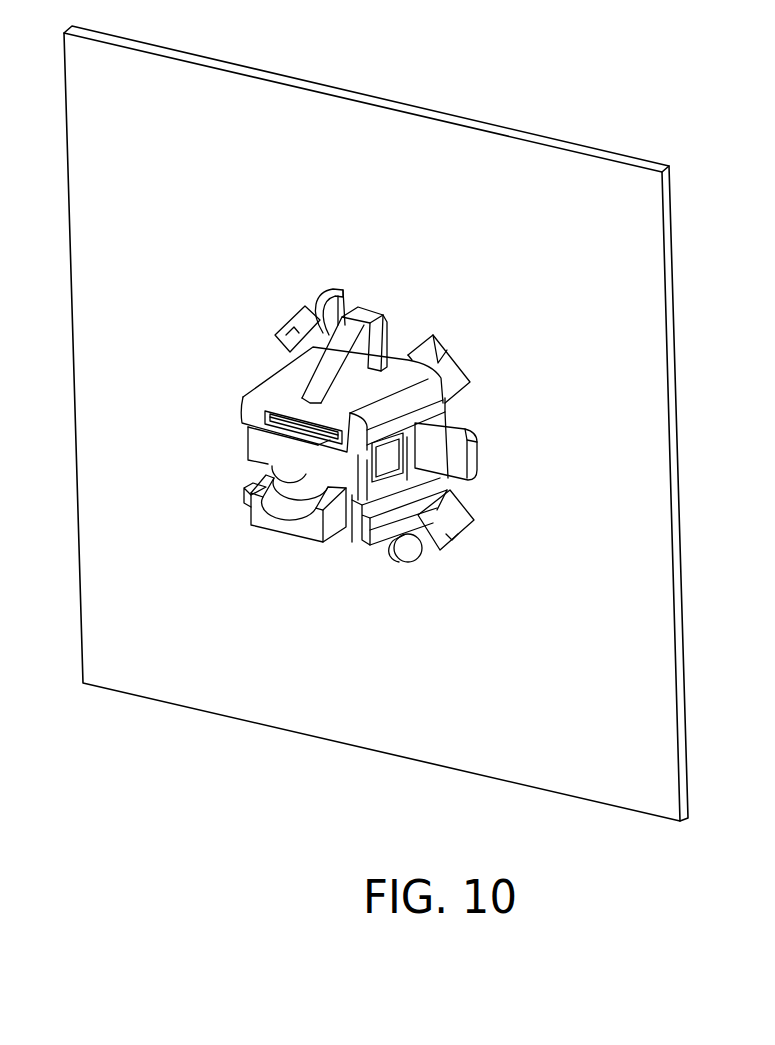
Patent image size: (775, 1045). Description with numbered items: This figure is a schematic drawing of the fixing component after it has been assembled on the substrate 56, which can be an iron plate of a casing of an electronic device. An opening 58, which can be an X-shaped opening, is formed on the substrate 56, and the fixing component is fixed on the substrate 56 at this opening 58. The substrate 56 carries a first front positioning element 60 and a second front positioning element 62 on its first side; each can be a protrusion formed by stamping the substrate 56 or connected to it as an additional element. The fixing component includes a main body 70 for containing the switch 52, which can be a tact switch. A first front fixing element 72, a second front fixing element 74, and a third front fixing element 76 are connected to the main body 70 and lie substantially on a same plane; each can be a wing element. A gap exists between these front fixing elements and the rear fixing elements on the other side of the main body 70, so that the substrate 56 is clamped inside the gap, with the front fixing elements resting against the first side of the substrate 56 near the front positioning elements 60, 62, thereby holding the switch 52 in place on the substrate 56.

The switch 52 is at (257, 450).
The substrate 56 is at (676, 312).
The opening 58 is at (438, 362).
The first front positioning element 60 is at (333, 292).
The second front positioning element 62 is at (420, 562).
The main body 70 is at (255, 408).
The first front fixing element 72 is at (367, 312).
The second front fixing element 74 is at (463, 457).
The third front fixing element 76 is at (380, 548).